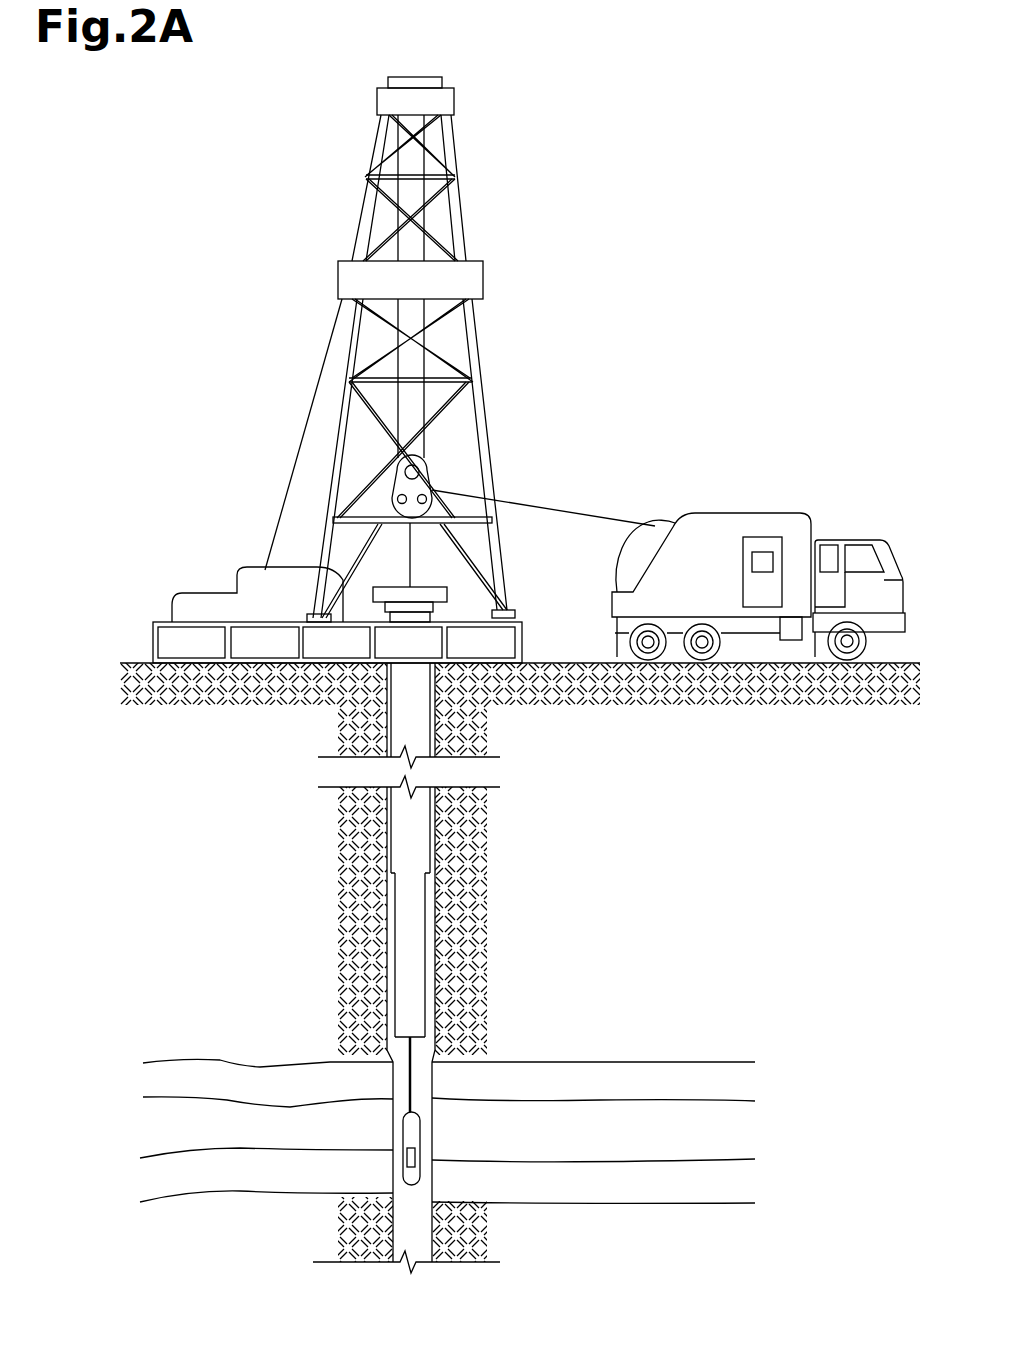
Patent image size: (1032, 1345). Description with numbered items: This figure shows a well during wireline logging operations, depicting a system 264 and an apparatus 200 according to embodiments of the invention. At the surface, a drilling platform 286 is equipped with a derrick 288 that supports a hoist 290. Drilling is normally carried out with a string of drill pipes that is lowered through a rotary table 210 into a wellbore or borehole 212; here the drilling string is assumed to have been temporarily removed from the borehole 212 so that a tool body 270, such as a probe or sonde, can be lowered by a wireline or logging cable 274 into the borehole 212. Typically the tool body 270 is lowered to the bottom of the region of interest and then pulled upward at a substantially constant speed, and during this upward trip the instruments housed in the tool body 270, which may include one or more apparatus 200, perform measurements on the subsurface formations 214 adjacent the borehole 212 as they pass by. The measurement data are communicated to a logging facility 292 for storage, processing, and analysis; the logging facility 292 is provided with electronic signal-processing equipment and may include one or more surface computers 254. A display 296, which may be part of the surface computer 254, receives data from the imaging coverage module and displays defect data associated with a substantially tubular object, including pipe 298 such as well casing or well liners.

The system 264 is at (672, 297).
The hoist 290 is at (427, 466).
The wireline or logging cable 274 is at (541, 507).
The logging facility 292 is at (758, 554).
The surface computer 254 is at (743, 540).
The display 296 is at (763, 572).
The rotary table 210 is at (437, 590).
The derrick 288 is at (506, 609).
The drilling platform 286 is at (522, 648).
The wellbore or borehole 212 is at (392, 1075).
The subsurface formations 214 is at (767, 1053).
The tool body 270 is at (420, 1126).
The apparatus 200 is at (416, 1156).
The pipe 298 is at (432, 1228).